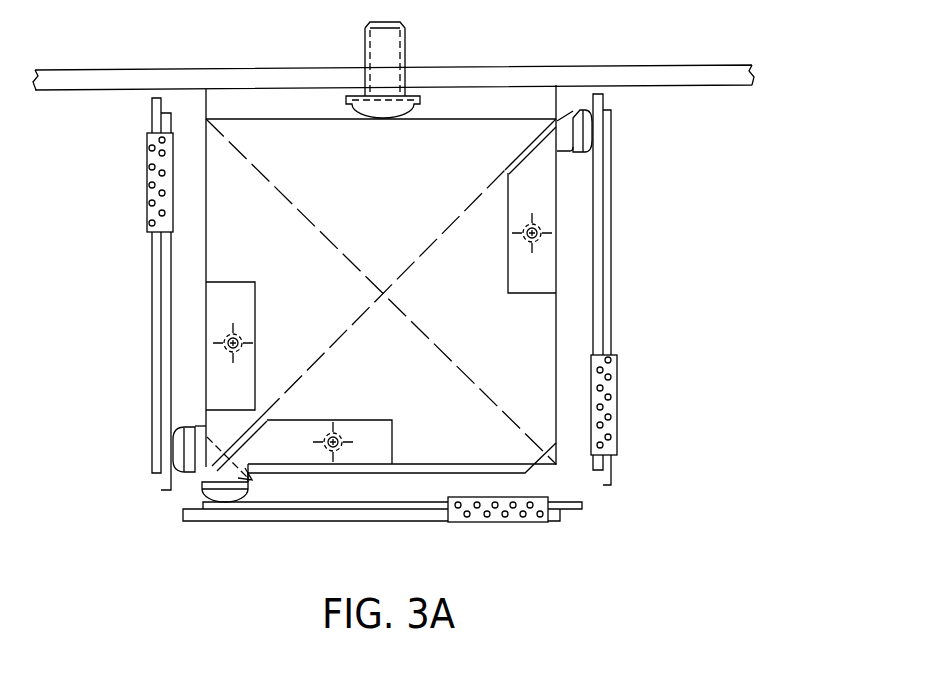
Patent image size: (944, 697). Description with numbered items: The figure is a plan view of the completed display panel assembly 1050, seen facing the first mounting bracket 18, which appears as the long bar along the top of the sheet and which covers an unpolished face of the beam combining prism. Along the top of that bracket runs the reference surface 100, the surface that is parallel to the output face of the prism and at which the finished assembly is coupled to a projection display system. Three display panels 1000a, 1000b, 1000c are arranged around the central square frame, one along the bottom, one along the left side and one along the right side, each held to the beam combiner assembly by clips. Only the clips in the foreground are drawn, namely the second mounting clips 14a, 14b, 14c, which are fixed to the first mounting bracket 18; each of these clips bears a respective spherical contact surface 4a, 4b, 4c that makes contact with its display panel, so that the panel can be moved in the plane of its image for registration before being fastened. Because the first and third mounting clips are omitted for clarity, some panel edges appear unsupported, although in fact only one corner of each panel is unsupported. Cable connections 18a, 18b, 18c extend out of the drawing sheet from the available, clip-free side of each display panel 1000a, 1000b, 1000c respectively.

The reference surface 100 is at (662, 76).
The first mounting bracket 18 is at (468, 103).
The cable connection 18a is at (517, 523).
The cable connection 18b is at (147, 164).
The cable connection 18c is at (617, 380).
The display panel 1000a is at (342, 521).
The display panel 1000b is at (152, 284).
The display panel 1000c is at (611, 240).
The spherical contact surface 4a is at (223, 503).
The spherical contact surface 4b is at (173, 448).
The spherical contact surface 4c is at (592, 130).
The second mounting clip 14a is at (212, 478).
The second mounting clip 14b is at (197, 442).
The second mounting clip 14c is at (575, 152).
The display panel assembly 1050 is at (650, 430).